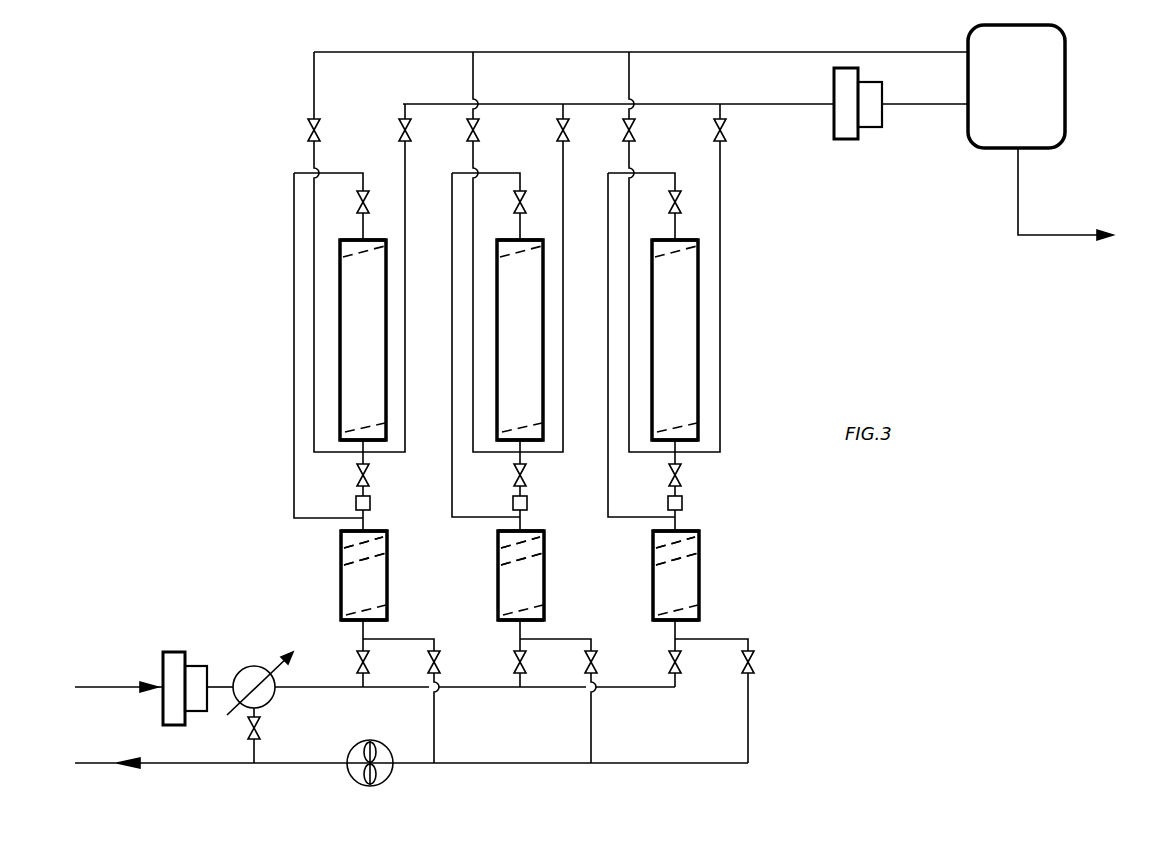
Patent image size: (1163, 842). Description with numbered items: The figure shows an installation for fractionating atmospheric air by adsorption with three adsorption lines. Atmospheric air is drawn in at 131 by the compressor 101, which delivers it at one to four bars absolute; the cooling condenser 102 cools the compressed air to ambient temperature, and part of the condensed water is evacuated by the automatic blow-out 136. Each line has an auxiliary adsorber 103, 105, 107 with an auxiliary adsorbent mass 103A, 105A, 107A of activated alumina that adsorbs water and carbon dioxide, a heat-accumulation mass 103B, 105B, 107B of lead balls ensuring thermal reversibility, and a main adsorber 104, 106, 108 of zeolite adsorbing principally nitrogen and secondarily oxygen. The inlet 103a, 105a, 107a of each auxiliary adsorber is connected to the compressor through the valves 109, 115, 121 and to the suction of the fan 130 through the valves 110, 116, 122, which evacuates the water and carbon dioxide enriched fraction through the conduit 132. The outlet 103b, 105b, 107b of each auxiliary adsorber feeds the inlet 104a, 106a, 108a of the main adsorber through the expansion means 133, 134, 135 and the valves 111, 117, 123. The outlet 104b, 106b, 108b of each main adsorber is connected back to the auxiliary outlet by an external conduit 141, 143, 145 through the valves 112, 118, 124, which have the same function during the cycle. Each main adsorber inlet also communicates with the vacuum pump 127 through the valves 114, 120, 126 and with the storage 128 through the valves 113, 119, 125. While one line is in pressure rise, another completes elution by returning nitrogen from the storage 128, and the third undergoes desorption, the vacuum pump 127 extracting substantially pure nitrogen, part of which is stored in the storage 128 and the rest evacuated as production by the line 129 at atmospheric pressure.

The compressor 101 is at (190, 665).
The cooling condenser 102 is at (247, 667).
The auxiliary adsorber 103 is at (341, 580).
The auxiliary adsorbent mass 103A is at (385, 590).
The heat-accumulation mass 103B is at (384, 551).
The inlet of auxiliary adsorber 103a is at (368, 621).
The outlet of auxiliary adsorber 103b is at (362, 531).
The main adsorber 104 is at (372, 350).
The inlet of main adsorber 104a is at (363, 441).
The outlet of main adsorber 104b is at (360, 240).
The auxiliary adsorber 105 is at (498, 598).
The auxiliary adsorbent mass 105A is at (542, 590).
The heat-accumulation mass 105B is at (541, 551).
The inlet of auxiliary adsorber 105a is at (525, 621).
The outlet of auxiliary adsorber 105b is at (522, 531).
The main adsorber 106 is at (528, 350).
The inlet of main adsorber 106a is at (520, 441).
The outlet of main adsorber 106b is at (517, 240).
The auxiliary adsorber 107 is at (653, 598).
The auxiliary adsorbent mass 107A is at (697, 590).
The heat-accumulation mass 107B is at (698, 551).
The inlet of auxiliary adsorber 107a is at (682, 621).
The outlet of auxiliary adsorber 107b is at (678, 531).
The main adsorber 108 is at (682, 350).
The inlet of main adsorber 108a is at (678, 441).
The outlet of main adsorber 108b is at (675, 240).
The valve 109 is at (357, 660).
The valve 110 is at (441, 663).
The valve 111 is at (370, 473).
The valve 112 is at (369, 201).
The valve 113 is at (320, 129).
The valve 114 is at (411, 129).
The valve 115 is at (527, 663).
The valve 116 is at (598, 663).
The valve 117 is at (527, 473).
The valve 118 is at (526, 201).
The valve 119 is at (479, 129).
The valve 120 is at (569, 129).
The valve 121 is at (682, 663).
The valve 122 is at (755, 663).
The valve 123 is at (682, 473).
The valve 124 is at (681, 201).
The valve 125 is at (635, 129).
The valve 126 is at (726, 129).
The vacuum pump 127 is at (875, 127).
The storage 128 is at (1067, 110).
The production line 129 is at (1085, 238).
The fan 130 is at (398, 744).
The air intake 131 is at (97, 686).
The evacuation conduit 132 is at (97, 762).
The expansion means 133 is at (371, 503).
The expansion means 134 is at (528, 503).
The expansion means 135 is at (683, 503).
The automatic blow-out 136 is at (261, 727).
The external conduit 141 is at (294, 287).
The external conduit 143 is at (452, 299).
The external conduit 145 is at (608, 303).